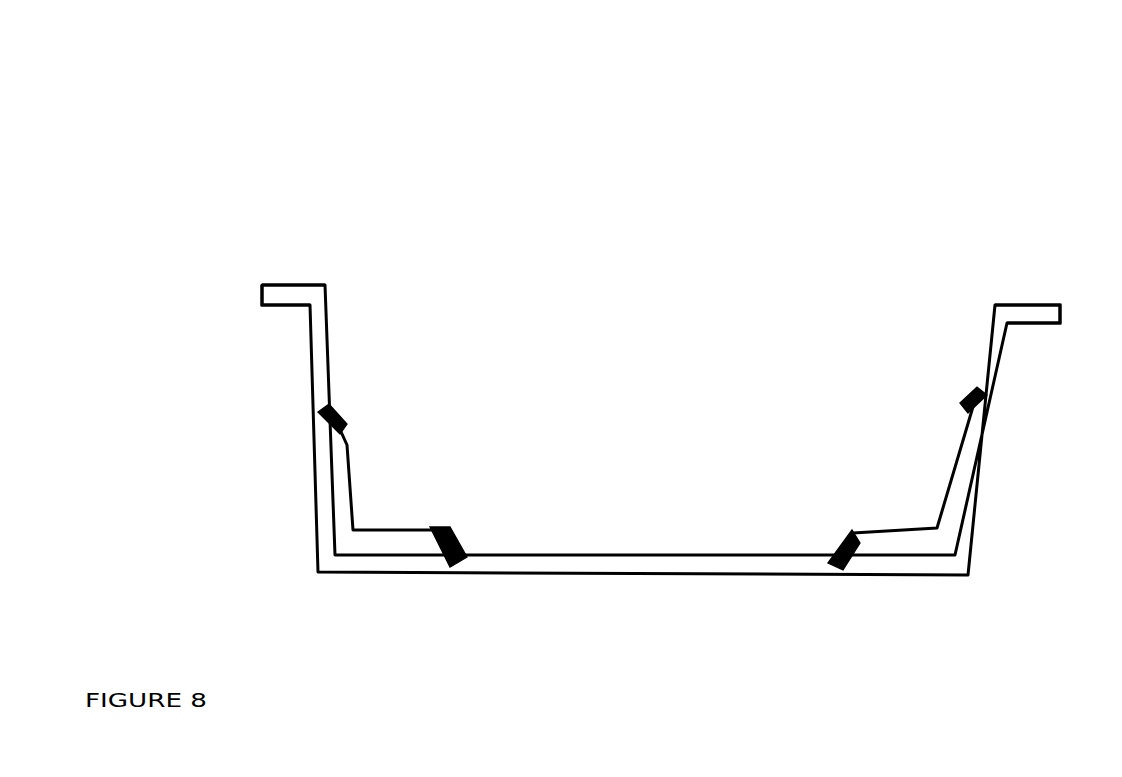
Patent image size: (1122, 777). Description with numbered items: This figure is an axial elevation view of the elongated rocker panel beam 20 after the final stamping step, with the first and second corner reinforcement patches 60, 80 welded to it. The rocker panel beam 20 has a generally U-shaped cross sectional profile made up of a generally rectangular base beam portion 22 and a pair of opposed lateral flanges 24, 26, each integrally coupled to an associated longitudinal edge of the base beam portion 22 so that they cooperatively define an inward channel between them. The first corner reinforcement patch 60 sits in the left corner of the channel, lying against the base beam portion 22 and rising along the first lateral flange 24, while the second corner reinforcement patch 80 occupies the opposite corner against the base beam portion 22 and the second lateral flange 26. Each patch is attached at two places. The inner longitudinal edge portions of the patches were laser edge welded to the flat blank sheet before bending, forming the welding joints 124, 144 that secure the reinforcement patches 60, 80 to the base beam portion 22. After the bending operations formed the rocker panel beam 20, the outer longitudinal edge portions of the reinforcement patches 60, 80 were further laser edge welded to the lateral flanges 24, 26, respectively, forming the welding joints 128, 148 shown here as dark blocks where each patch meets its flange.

The rocker panel beam 20 is at (917, 148).
The base beam portion 22 is at (637, 560).
The first lateral flange 24 is at (315, 332).
The second lateral flange 26 is at (993, 347).
The first corner reinforcement patch 60 is at (338, 507).
The second corner reinforcement patch 80 is at (947, 520).
The welding joint 124 is at (442, 527).
The welding joint 128 is at (333, 413).
The welding joint 144 is at (843, 540).
The welding joint 148 is at (963, 403).